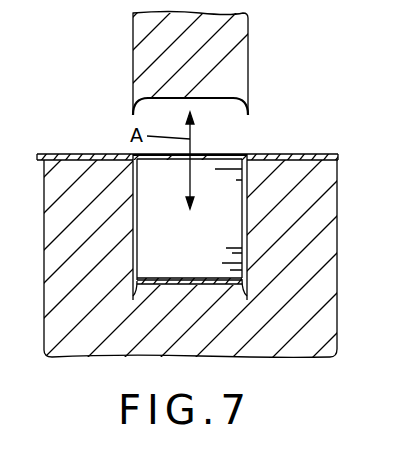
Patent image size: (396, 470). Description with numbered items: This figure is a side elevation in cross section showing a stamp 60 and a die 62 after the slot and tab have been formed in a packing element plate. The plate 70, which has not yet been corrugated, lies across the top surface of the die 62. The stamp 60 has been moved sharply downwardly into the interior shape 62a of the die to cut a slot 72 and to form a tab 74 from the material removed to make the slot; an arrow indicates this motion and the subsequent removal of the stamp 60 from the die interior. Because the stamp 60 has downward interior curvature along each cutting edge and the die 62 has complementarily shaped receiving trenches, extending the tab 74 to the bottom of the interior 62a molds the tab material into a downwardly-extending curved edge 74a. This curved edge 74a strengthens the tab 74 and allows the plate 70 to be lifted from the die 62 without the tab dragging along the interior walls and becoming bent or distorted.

The stamp 60 is at (248, 47).
The die 62 is at (331, 177).
The interior shape of the die 62a is at (137, 211).
The plate 70 is at (83, 154).
The slot 72 is at (237, 156).
The tab 74 is at (180, 281).
The curved edge of the tab 74a is at (243, 287).